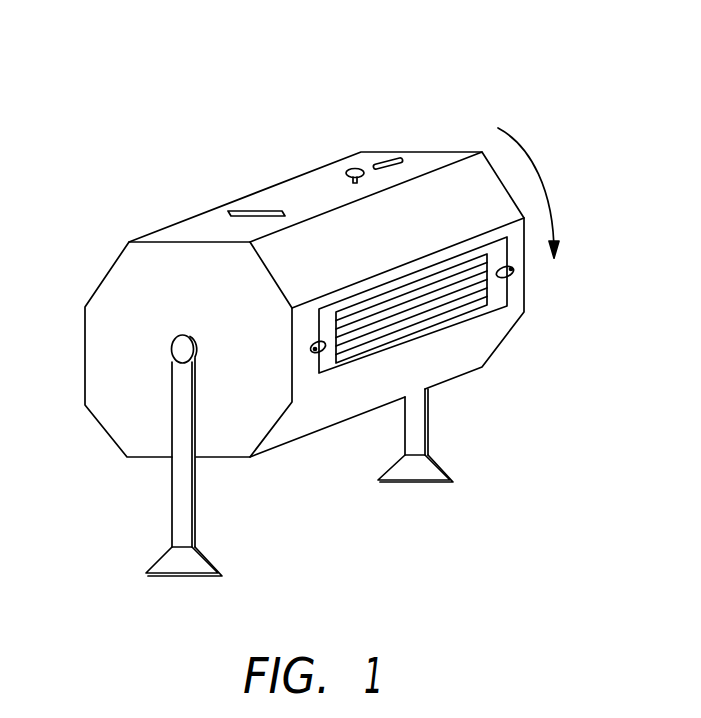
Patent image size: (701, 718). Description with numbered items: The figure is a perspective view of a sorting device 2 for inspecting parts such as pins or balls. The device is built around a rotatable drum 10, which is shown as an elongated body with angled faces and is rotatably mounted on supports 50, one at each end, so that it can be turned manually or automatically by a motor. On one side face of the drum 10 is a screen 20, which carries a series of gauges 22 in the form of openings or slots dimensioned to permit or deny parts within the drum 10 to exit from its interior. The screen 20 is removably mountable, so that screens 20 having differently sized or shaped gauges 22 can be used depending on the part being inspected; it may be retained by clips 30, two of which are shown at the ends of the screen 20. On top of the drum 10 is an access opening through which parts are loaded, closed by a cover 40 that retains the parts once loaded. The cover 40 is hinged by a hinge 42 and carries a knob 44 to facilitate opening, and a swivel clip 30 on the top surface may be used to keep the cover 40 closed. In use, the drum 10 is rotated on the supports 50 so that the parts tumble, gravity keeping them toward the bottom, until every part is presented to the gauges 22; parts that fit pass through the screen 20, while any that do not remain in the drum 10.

The sorting device 2 is at (500, 78).
The rotatable drum 10 is at (146, 421).
The screen 20 is at (330, 323).
The gauges 22 is at (350, 357).
The clips 30 is at (398, 157).
The cover 40 is at (293, 202).
The hinge 42 is at (253, 212).
The knob 44 is at (352, 168).
The supports 50 is at (157, 566).